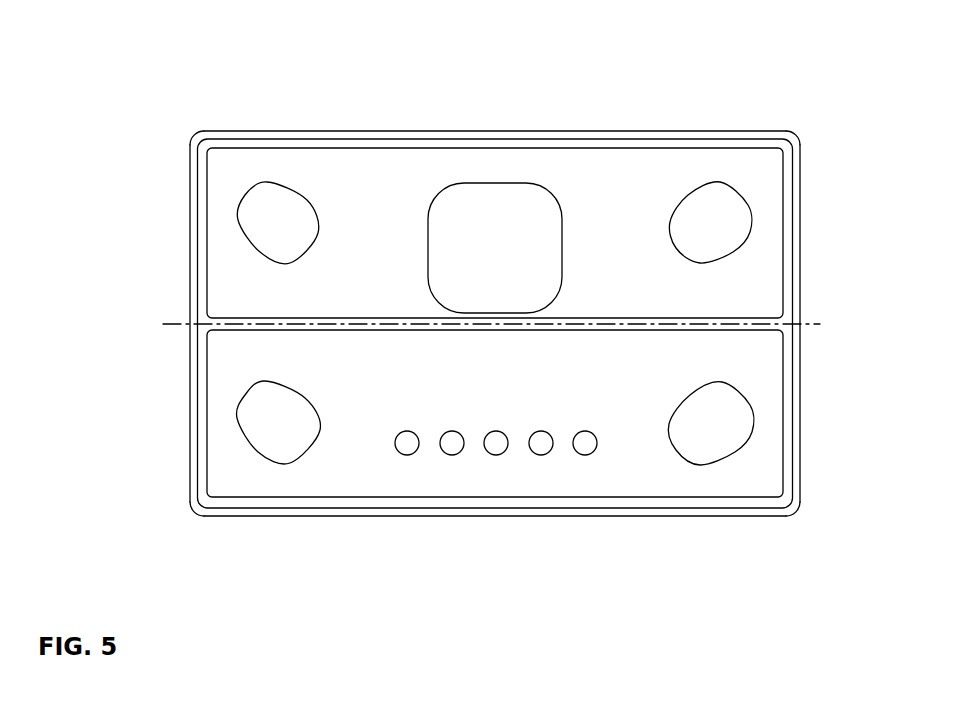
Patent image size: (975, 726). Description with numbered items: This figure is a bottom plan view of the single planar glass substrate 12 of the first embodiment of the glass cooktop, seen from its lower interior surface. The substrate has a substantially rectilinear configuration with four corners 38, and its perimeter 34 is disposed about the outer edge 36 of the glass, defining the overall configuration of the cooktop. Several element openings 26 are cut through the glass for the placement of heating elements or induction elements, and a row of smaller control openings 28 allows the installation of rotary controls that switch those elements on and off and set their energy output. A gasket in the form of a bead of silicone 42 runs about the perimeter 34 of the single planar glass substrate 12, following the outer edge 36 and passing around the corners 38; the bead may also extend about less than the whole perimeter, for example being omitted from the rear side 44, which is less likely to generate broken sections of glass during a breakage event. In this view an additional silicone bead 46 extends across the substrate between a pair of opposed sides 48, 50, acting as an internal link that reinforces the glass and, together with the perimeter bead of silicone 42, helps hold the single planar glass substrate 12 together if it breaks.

The single planar glass substrate 12 is at (845, 117).
The element openings 26 is at (250, 238).
The control openings 28 is at (407, 455).
The perimeter 34 is at (641, 519).
The outer edge 36 is at (802, 356).
The corners 38 is at (195, 133).
The bead of silicone 42 is at (325, 136).
The rear side 44 is at (395, 130).
The additional silicone bead 46 is at (374, 330).
The first opposed side 48 is at (190, 280).
The second opposed side 50 is at (800, 273).